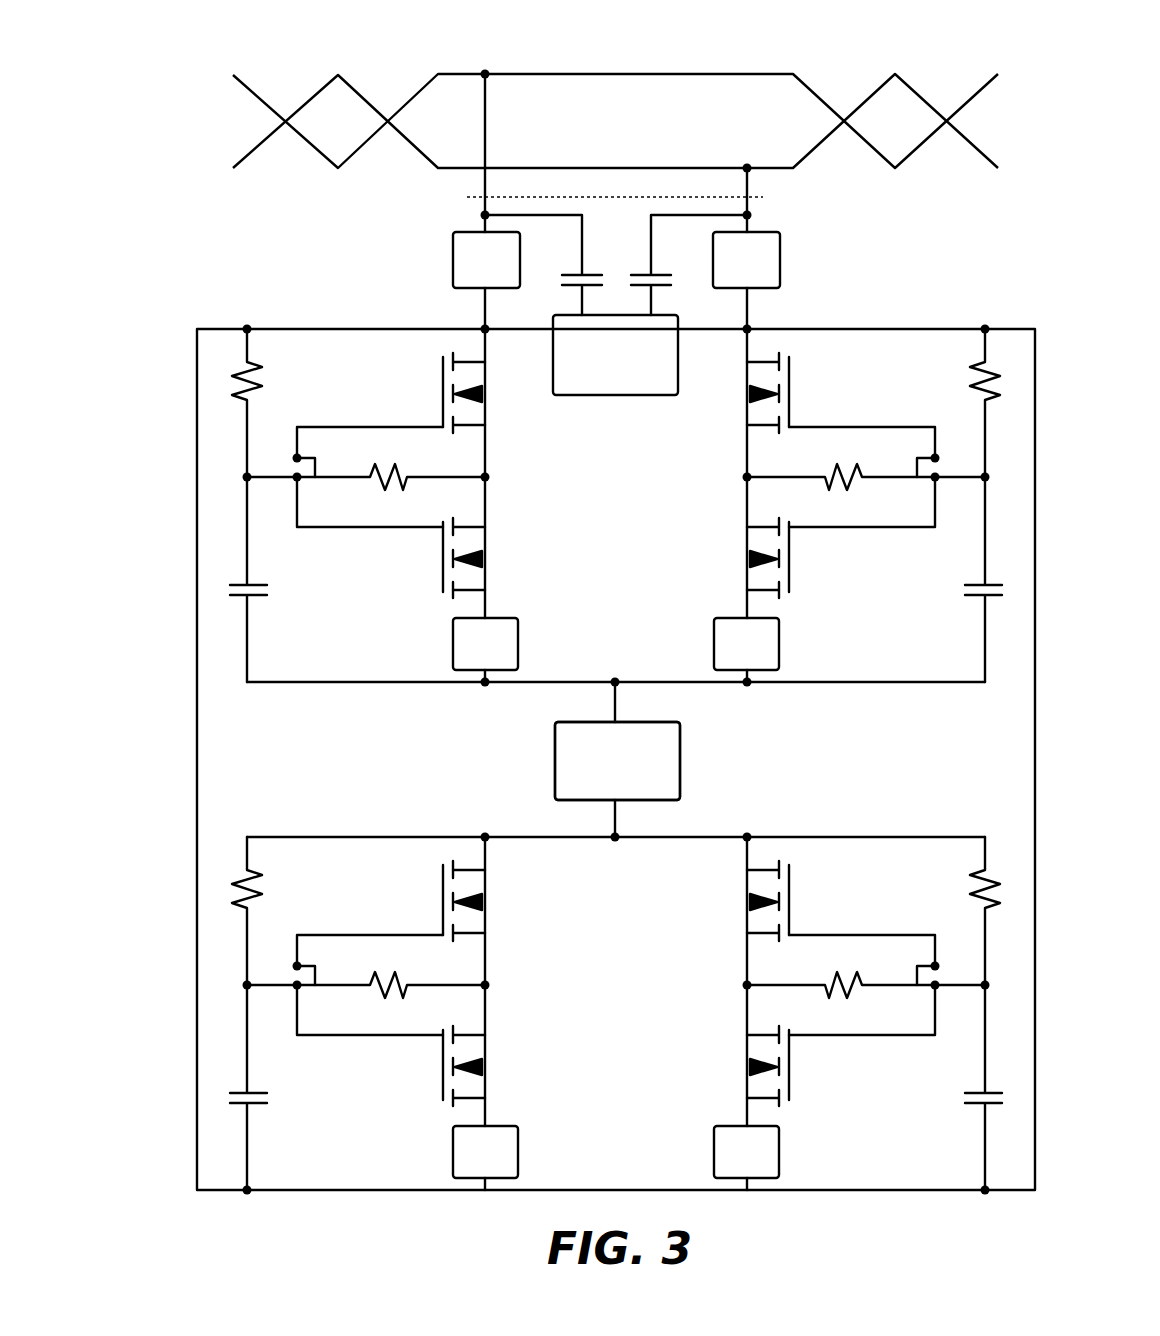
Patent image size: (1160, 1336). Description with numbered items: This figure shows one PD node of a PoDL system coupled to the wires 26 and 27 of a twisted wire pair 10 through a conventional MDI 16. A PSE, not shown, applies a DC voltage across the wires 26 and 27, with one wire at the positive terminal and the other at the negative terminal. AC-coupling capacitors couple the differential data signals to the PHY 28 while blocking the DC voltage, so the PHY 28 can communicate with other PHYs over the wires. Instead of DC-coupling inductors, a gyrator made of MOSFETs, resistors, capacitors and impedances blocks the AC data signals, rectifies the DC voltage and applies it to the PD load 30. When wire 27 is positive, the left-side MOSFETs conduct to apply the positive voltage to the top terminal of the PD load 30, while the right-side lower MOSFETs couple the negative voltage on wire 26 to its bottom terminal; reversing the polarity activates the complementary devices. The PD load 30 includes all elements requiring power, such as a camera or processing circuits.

The twisted wire pair 10 is at (440, 43).
The wire 27 is at (247, 80).
The wire 26 is at (243, 160).
The MDI 16 is at (477, 200).
The PHY 28 is at (593, 397).
The PD load 30 is at (553, 752).